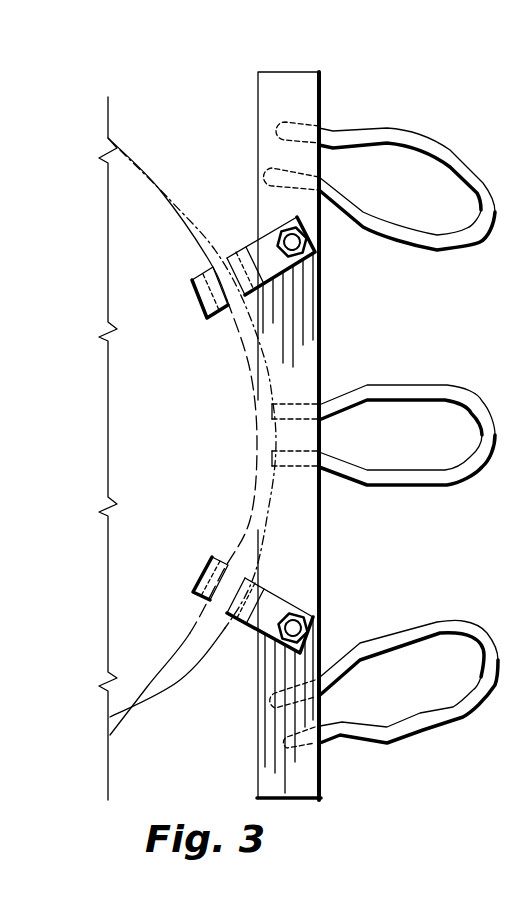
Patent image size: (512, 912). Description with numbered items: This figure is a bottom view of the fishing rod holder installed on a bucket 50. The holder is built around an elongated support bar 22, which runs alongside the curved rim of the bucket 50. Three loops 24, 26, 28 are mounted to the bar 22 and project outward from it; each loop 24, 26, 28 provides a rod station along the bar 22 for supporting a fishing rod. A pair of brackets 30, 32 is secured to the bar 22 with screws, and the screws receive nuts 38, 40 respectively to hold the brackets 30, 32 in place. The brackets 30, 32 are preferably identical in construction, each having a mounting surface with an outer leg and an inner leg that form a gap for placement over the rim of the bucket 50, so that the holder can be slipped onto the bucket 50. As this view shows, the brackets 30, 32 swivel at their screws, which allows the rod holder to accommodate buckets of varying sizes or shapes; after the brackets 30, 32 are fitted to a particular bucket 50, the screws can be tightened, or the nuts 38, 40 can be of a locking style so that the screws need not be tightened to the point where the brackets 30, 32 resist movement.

The support bar 22 is at (303, 492).
The loop 24 is at (450, 713).
The loop 26 is at (447, 383).
The loop 28 is at (407, 140).
The bracket 30 is at (252, 623).
The bracket 32 is at (257, 248).
The nut 38 is at (312, 615).
The nut 40 is at (313, 253).
The bucket 50 is at (138, 158).